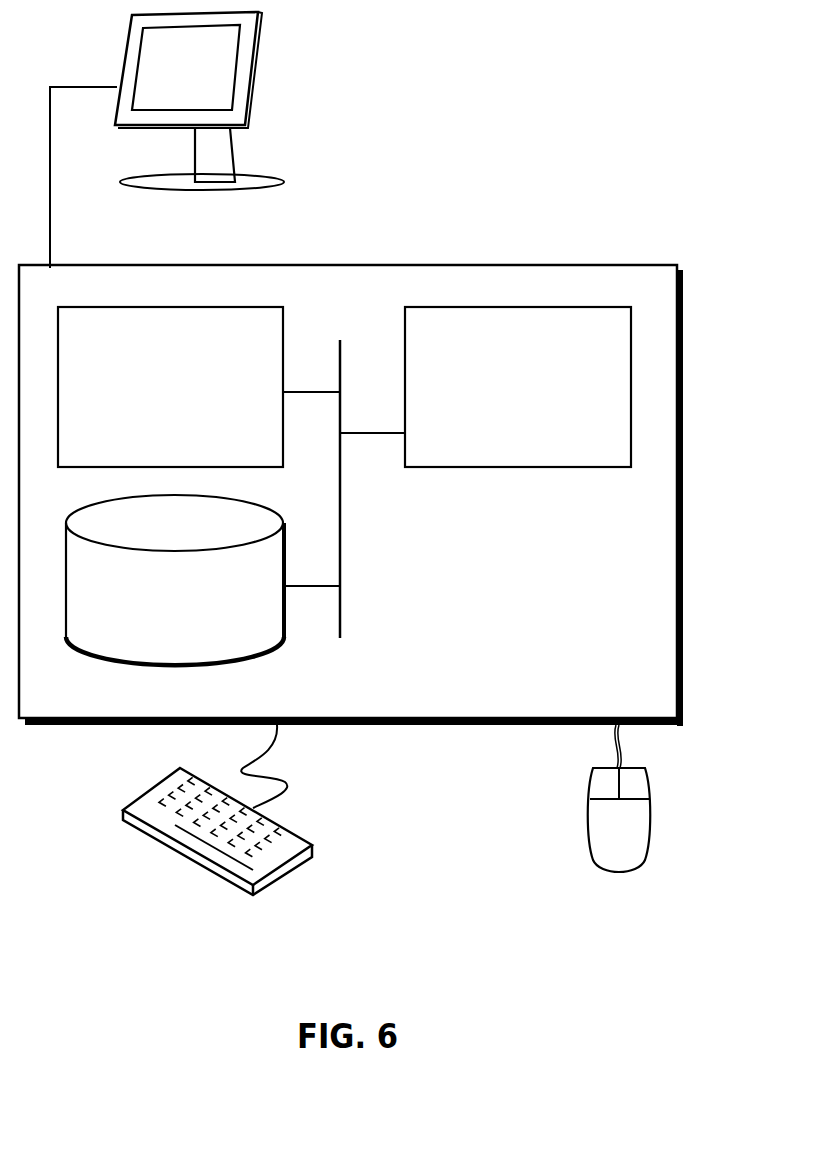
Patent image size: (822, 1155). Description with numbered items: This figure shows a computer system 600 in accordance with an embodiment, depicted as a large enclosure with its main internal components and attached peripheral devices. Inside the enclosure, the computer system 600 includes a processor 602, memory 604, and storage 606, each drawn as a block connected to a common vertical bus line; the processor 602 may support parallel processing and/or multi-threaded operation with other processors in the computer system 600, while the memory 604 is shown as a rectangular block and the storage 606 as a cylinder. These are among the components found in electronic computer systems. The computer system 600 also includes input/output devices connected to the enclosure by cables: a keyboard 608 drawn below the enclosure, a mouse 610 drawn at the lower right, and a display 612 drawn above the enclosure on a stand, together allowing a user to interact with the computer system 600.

The computer system 600 is at (395, 243).
The processor 602 is at (542, 399).
The memory 604 is at (192, 398).
The storage 606 is at (198, 609).
The keyboard 608 is at (140, 832).
The mouse 610 is at (639, 841).
The display 612 is at (167, 140).